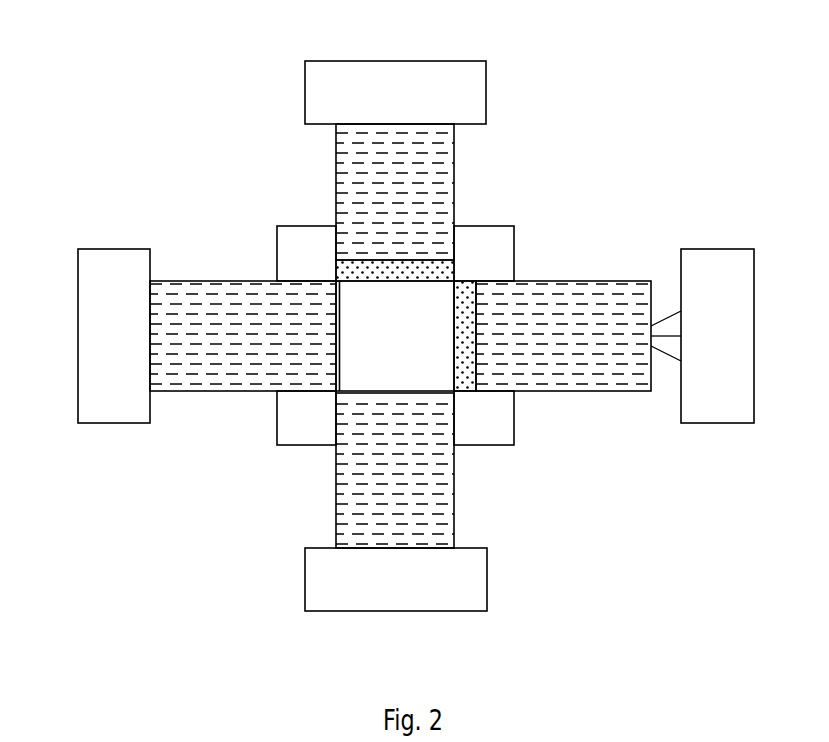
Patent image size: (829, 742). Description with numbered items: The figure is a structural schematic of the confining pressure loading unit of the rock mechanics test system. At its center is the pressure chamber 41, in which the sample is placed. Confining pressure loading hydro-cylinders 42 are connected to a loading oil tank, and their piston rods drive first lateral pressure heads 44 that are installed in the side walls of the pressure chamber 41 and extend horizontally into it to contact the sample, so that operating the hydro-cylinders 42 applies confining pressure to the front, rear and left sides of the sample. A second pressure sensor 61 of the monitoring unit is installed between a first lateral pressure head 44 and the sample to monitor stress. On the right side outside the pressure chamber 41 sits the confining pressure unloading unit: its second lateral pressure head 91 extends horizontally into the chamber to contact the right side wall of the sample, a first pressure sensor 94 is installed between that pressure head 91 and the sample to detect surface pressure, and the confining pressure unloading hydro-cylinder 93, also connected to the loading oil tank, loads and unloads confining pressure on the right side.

The pressure chamber 41 is at (277, 445).
The confining pressure loading hydro-cylinder 42 is at (100, 283).
The first lateral pressure head 44 is at (250, 303).
The second pressure sensor 61 is at (336, 366).
The second lateral pressure head 91 is at (529, 312).
The confining pressure unloading hydro-cylinder 93 is at (717, 272).
The first pressure sensor 94 is at (476, 373).